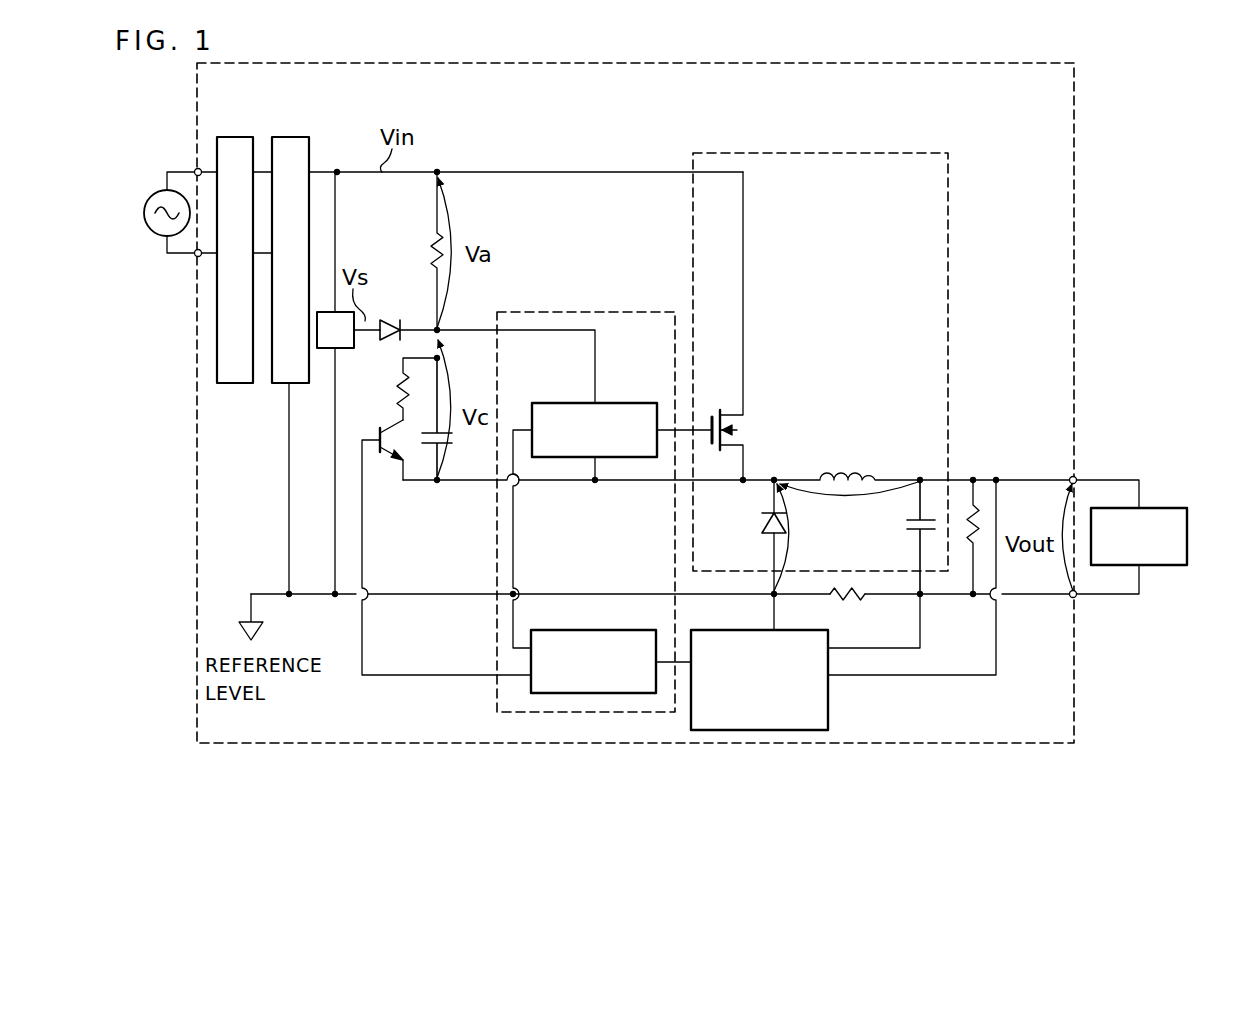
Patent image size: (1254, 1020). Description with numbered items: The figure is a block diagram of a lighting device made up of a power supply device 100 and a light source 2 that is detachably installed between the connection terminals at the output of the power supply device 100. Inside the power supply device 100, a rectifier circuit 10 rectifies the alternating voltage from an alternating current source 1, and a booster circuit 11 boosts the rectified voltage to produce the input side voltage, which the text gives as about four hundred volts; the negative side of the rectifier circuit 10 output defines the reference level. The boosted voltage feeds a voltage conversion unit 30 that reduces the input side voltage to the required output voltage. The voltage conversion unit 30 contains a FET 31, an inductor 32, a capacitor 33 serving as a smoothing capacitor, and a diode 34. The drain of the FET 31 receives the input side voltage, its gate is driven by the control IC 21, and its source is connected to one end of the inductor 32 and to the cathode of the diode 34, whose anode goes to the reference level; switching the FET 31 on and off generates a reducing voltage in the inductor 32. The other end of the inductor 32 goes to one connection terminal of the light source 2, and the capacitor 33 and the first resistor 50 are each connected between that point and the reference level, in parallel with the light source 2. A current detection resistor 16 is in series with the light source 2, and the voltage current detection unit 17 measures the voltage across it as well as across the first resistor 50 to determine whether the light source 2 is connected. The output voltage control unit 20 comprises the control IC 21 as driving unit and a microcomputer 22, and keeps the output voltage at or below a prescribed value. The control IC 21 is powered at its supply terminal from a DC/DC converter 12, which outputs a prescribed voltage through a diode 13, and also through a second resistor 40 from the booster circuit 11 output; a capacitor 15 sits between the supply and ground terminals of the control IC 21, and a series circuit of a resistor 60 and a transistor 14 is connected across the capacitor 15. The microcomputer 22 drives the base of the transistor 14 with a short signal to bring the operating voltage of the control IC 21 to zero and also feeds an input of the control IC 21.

The alternating current source 1 is at (167, 171).
The light source 2 is at (1167, 508).
The rectifier circuit 10 is at (235, 137).
The booster circuit 11 is at (290, 137).
The DC/DC converter 12 is at (328, 364).
The diode 13 is at (390, 317).
The transistor 14 is at (388, 425).
The capacitor 15 is at (423, 452).
The current detection resistor 16 is at (850, 598).
The voltage current detection unit 17 is at (720, 631).
The output voltage control unit 20 is at (625, 312).
The control IC 21 is at (622, 403).
The microcomputer 22 is at (596, 631).
The voltage conversion unit 30 is at (877, 153).
The FET 31 is at (748, 425).
The inductor 32 is at (850, 472).
The capacitor 33 is at (906, 527).
The diode 34 is at (767, 526).
The second resistor 40 is at (428, 250).
The first resistor 50 is at (975, 497).
The resistor 60 is at (395, 396).
The power supply device 100 is at (1075, 92).